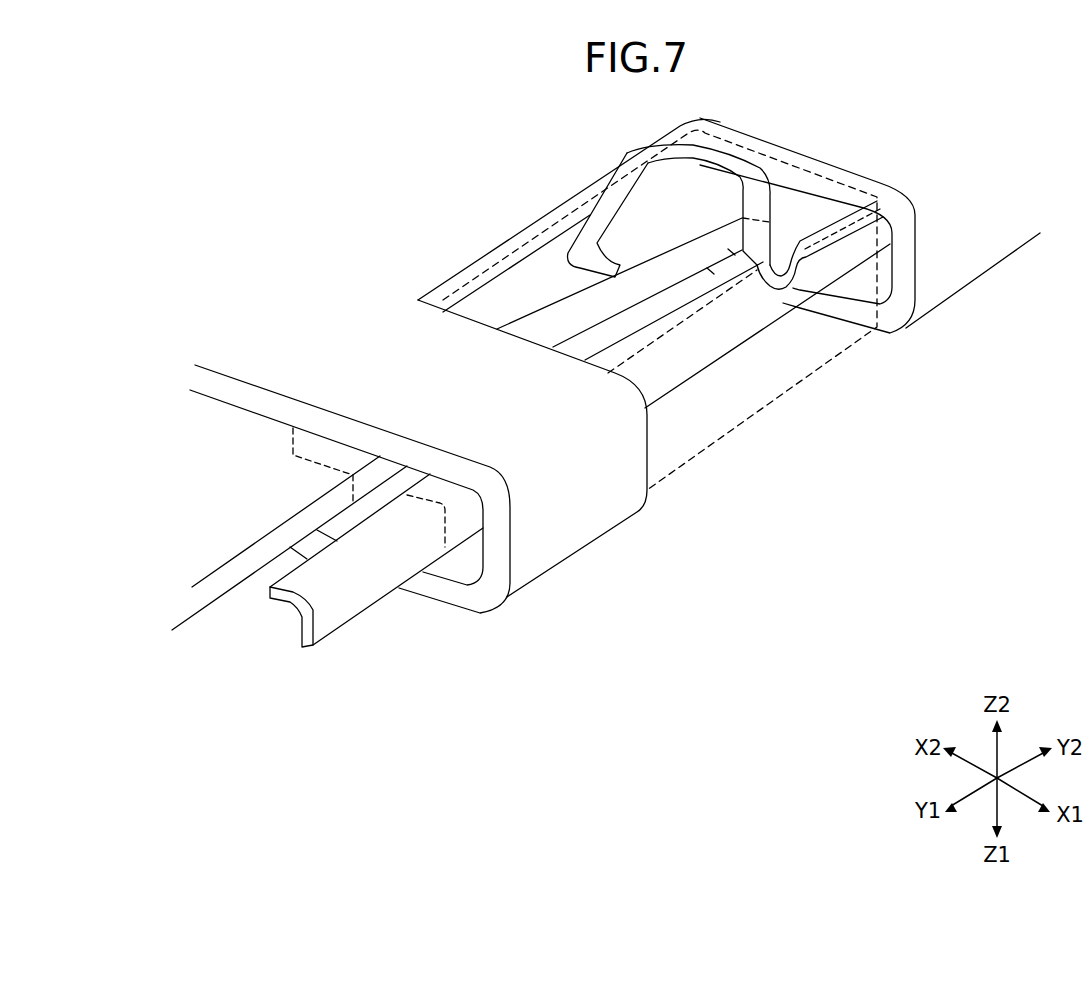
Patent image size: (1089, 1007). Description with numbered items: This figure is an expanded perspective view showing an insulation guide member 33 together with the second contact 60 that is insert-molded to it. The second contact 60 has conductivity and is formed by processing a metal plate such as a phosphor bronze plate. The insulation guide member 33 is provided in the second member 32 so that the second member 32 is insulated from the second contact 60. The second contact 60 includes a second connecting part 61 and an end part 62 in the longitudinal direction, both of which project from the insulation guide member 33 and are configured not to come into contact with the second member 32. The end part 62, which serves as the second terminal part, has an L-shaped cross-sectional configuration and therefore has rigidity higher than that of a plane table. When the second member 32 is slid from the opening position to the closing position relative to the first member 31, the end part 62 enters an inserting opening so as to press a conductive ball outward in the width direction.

The first member 31 is at (222, 588).
The second member 32 is at (958, 262).
The insulation guide member 33 is at (793, 367).
The second contact 60 is at (693, 350).
The second connecting part 61 is at (637, 185).
The end part 62 is at (372, 626).